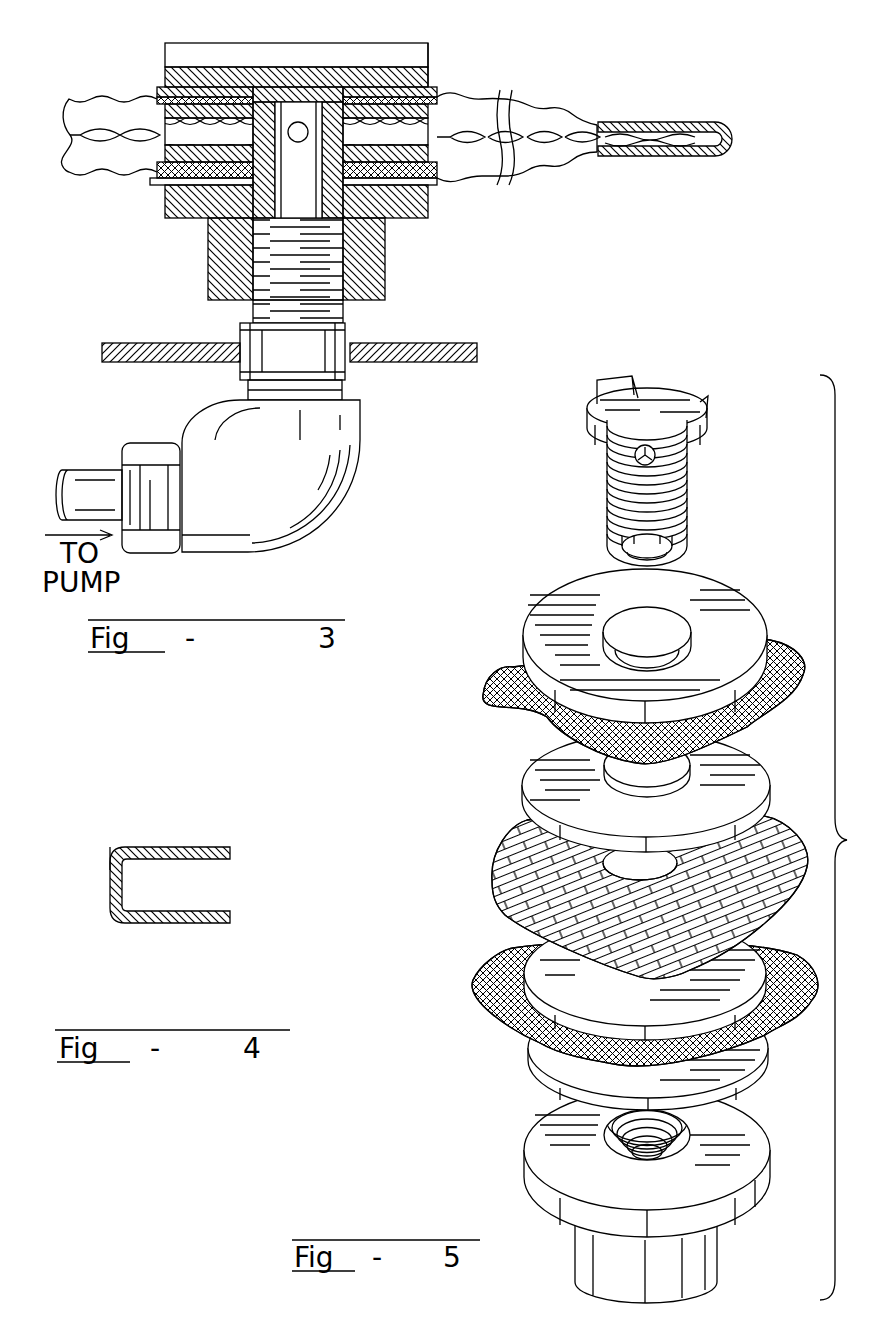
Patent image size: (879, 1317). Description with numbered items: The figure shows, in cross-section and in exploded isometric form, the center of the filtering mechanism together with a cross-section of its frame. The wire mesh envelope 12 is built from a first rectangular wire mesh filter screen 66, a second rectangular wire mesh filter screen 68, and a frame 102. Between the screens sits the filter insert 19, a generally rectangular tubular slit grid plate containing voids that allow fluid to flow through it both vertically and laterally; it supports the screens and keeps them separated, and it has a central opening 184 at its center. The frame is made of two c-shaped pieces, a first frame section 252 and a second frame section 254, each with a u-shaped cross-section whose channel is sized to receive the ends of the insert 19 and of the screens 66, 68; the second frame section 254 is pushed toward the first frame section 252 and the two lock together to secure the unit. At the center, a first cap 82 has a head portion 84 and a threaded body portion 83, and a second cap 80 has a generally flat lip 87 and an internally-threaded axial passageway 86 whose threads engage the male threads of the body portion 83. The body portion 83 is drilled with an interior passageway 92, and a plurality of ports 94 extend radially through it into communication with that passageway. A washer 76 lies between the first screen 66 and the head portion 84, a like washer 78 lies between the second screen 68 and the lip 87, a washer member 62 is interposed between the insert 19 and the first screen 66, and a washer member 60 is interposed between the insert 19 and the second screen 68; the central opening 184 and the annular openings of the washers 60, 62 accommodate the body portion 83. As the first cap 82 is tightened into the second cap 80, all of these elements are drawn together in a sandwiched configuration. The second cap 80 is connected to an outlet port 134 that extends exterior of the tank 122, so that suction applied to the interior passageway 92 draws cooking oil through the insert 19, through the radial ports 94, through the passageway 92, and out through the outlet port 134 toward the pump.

In FIG. 3, the wire mesh envelope 12 is at (598, 125).
In FIG. 3, the filter insert 19 is at (125, 175).
In FIG. 5, the filter insert 19 is at (510, 848).
In FIG. 3, the washer member 60 is at (480, 165).
In FIG. 5, the washer member 60 is at (527, 933).
In FIG. 3, the washer member 62 is at (480, 108).
In FIG. 5, the washer member 62 is at (520, 758).
In FIG. 3, the first rectangular wire mesh filter screen 66 is at (110, 98).
In FIG. 5, the first rectangular wire mesh filter screen 66 is at (500, 690).
In FIG. 3, the second rectangular wire mesh filter screen 68 is at (100, 174).
In FIG. 5, the second rectangular wire mesh filter screen 68 is at (503, 1016).
In FIG. 3, the washer 76 is at (440, 92).
In FIG. 5, the washer 76 is at (540, 615).
In FIG. 3, the washer 78 is at (430, 186).
In FIG. 5, the washer 78 is at (522, 1058).
In FIG. 3, the second cap 80 is at (390, 258).
In FIG. 5, the second cap 80 is at (577, 1245).
In FIG. 3, the first cap 82 is at (370, 43).
In FIG. 5, the first cap 82 is at (590, 412).
In FIG. 3, the threaded body portion 83 is at (252, 222).
In FIG. 5, the threaded body portion 83 is at (607, 515).
In FIG. 3, the head portion 84 is at (430, 78).
In FIG. 5, the head portion 84 is at (712, 408).
In FIG. 3, the internally-threaded axial passageway 86 is at (385, 295).
In FIG. 5, the internally-threaded axial passageway 86 is at (603, 1138).
In FIG. 3, the lip 87 is at (400, 236).
In FIG. 5, the lip 87 is at (525, 1172).
In FIG. 3, the interior passageway 92 is at (285, 205).
In FIG. 5, the interior passageway 92 is at (660, 560).
In FIG. 3, the ports 94 is at (265, 130).
In FIG. 5, the ports 94 is at (600, 470).
In FIG. 3, the frame 102 is at (680, 152).
In FIG. 3, the tank 122 is at (400, 365).
In FIG. 3, the outlet port 134 is at (350, 338).
In FIG. 5, the central opening 184 is at (650, 878).
In FIG. 4, the first frame section 252 is at (137, 834).
In FIG. 4, the second frame section 254 is at (100, 838).